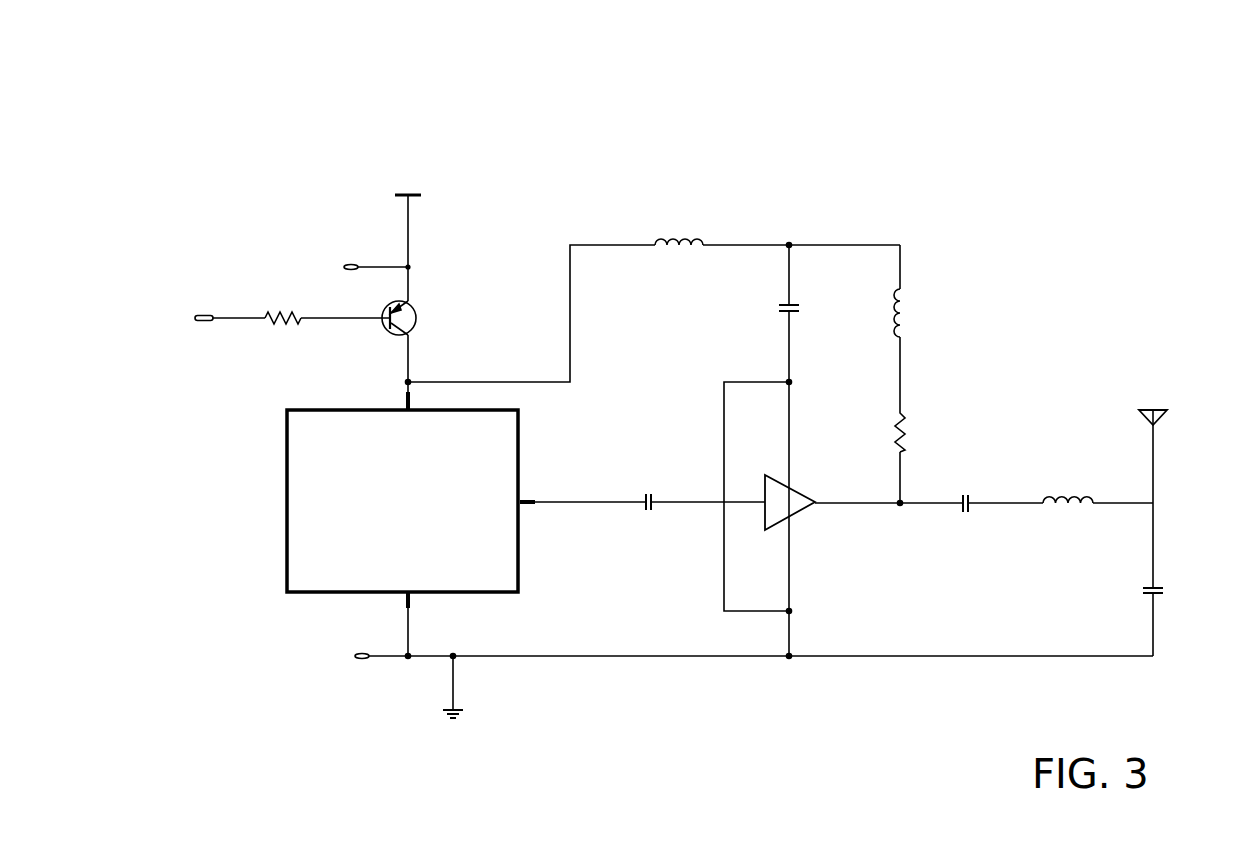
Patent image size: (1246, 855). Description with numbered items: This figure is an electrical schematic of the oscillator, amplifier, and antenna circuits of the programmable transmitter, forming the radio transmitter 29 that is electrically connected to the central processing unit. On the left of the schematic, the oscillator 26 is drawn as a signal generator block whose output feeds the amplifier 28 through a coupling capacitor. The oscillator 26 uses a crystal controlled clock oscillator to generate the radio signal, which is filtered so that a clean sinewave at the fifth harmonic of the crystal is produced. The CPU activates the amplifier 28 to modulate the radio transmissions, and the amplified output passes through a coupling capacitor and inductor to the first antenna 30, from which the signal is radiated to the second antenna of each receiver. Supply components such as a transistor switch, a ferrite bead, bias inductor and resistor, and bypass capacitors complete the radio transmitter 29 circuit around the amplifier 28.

The radio transmitter 29 is at (197, 197).
The oscillator 26 is at (287, 475).
The amplifier 28 is at (796, 487).
The first antenna 30 is at (1153, 477).